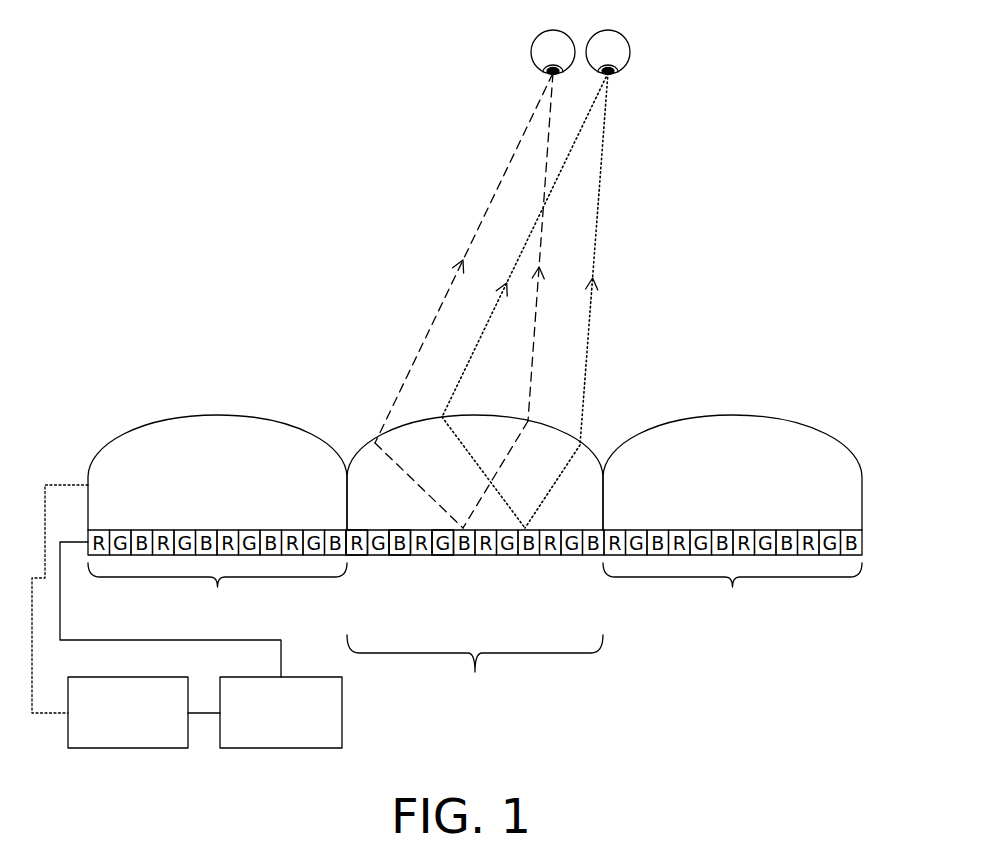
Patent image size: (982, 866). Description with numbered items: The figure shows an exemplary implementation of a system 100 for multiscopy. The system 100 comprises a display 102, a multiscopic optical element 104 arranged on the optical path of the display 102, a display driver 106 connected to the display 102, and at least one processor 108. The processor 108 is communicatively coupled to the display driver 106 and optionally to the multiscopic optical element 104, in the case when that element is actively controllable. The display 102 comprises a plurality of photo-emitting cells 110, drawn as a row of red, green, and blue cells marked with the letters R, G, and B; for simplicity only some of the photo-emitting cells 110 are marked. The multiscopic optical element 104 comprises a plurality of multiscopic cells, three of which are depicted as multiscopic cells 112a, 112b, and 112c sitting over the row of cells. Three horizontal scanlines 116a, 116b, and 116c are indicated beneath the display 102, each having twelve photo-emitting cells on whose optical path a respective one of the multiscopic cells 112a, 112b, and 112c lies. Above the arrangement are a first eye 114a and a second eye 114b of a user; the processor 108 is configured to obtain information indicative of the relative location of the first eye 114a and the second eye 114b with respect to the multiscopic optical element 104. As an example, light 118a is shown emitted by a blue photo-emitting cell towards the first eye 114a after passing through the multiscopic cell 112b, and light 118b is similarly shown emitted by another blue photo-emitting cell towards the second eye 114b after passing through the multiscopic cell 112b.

The system for multiscopy 100 is at (170, 103).
The display 102 is at (487, 611).
The multiscopic optical element 104 is at (449, 446).
The display driver 106 is at (201, 645).
The processor 108 is at (110, 616).
The photo-emitting cells 110 is at (358, 556).
The multiscopic cell 112a is at (217, 472).
The multiscopic cell 112b is at (475, 472).
The multiscopic cell 112c is at (732, 472).
The first eye 114a is at (531, 50).
The second eye 114b is at (630, 52).
The horizontal scanline 116a is at (217, 590).
The horizontal scanline 116b is at (475, 668).
The horizontal scanline 116c is at (732, 590).
The light 118a is at (545, 169).
The light 118b is at (562, 167).